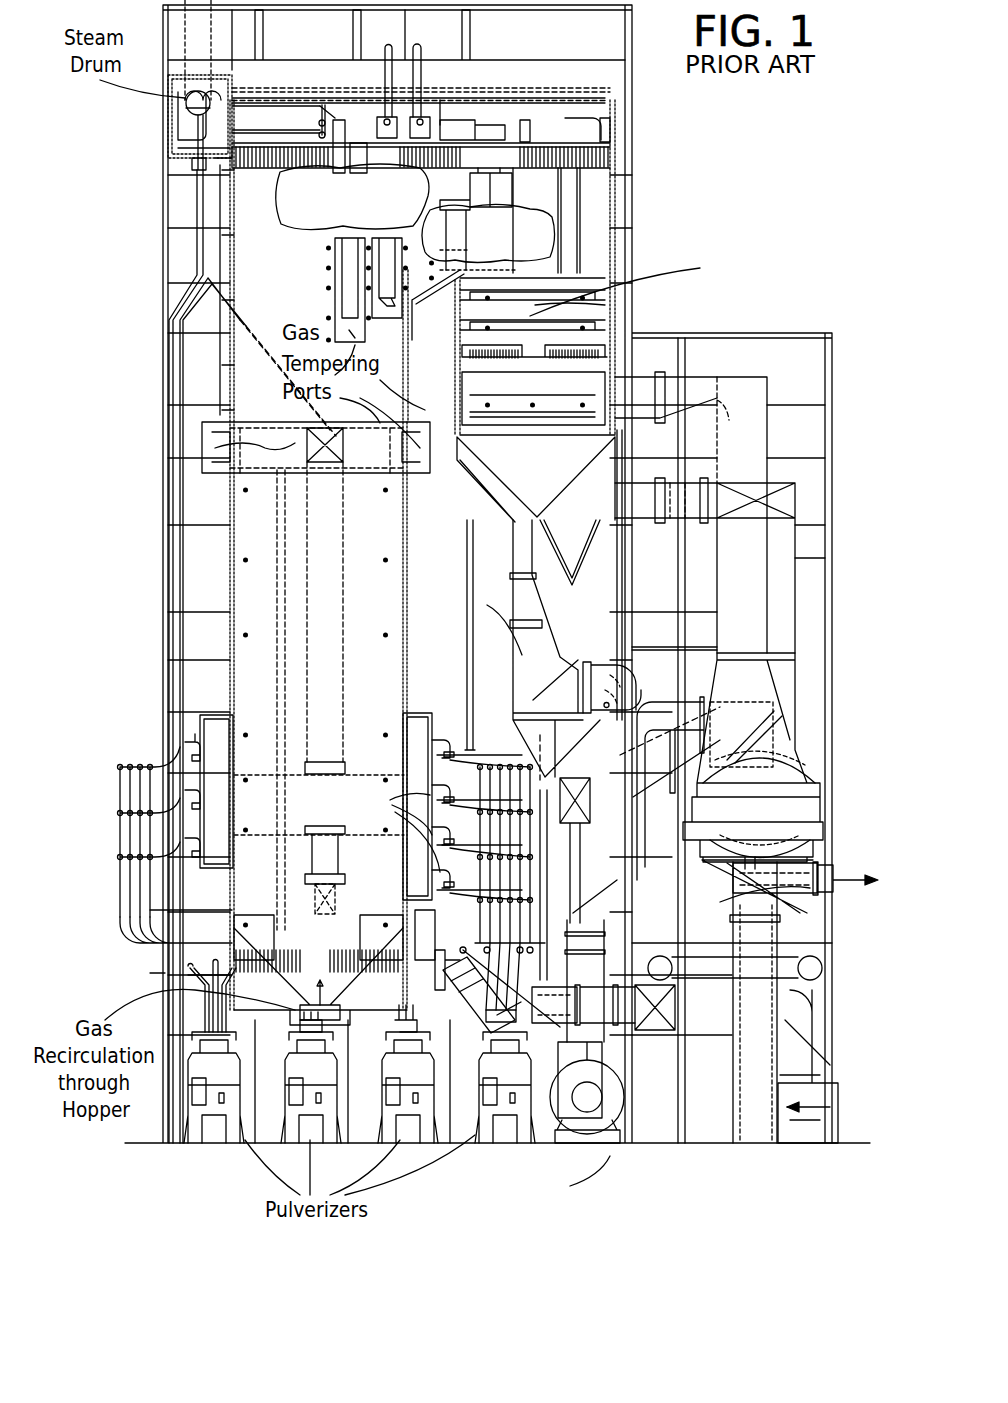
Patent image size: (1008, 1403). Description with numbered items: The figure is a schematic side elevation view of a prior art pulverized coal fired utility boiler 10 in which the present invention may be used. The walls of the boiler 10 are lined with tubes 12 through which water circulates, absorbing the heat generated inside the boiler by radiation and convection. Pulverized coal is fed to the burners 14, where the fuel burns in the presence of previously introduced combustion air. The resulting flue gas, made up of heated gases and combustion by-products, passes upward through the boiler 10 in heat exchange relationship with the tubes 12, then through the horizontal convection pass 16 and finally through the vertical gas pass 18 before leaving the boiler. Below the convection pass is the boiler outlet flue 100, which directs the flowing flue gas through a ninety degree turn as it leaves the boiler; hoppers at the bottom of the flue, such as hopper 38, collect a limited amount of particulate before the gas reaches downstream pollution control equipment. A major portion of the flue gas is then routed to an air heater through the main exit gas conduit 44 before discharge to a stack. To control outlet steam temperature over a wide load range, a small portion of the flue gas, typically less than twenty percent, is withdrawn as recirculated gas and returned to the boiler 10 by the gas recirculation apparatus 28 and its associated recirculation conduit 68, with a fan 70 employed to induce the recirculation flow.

The pulverized coal fired boiler 10 is at (120, 525).
The tubes 12 is at (178, 390).
The burners 14 is at (188, 810).
The horizontal convection pass 16 is at (445, 200).
The vertical gas pass 18 is at (544, 361).
The gas recirculation apparatus 28 is at (515, 505).
The flue gas hopper 38 is at (580, 542).
The main exit gas conduit 44 is at (731, 598).
The recirculation conduit 68 is at (600, 664).
The fan 70 is at (612, 1066).
The boiler outlet flue 100 is at (554, 473).